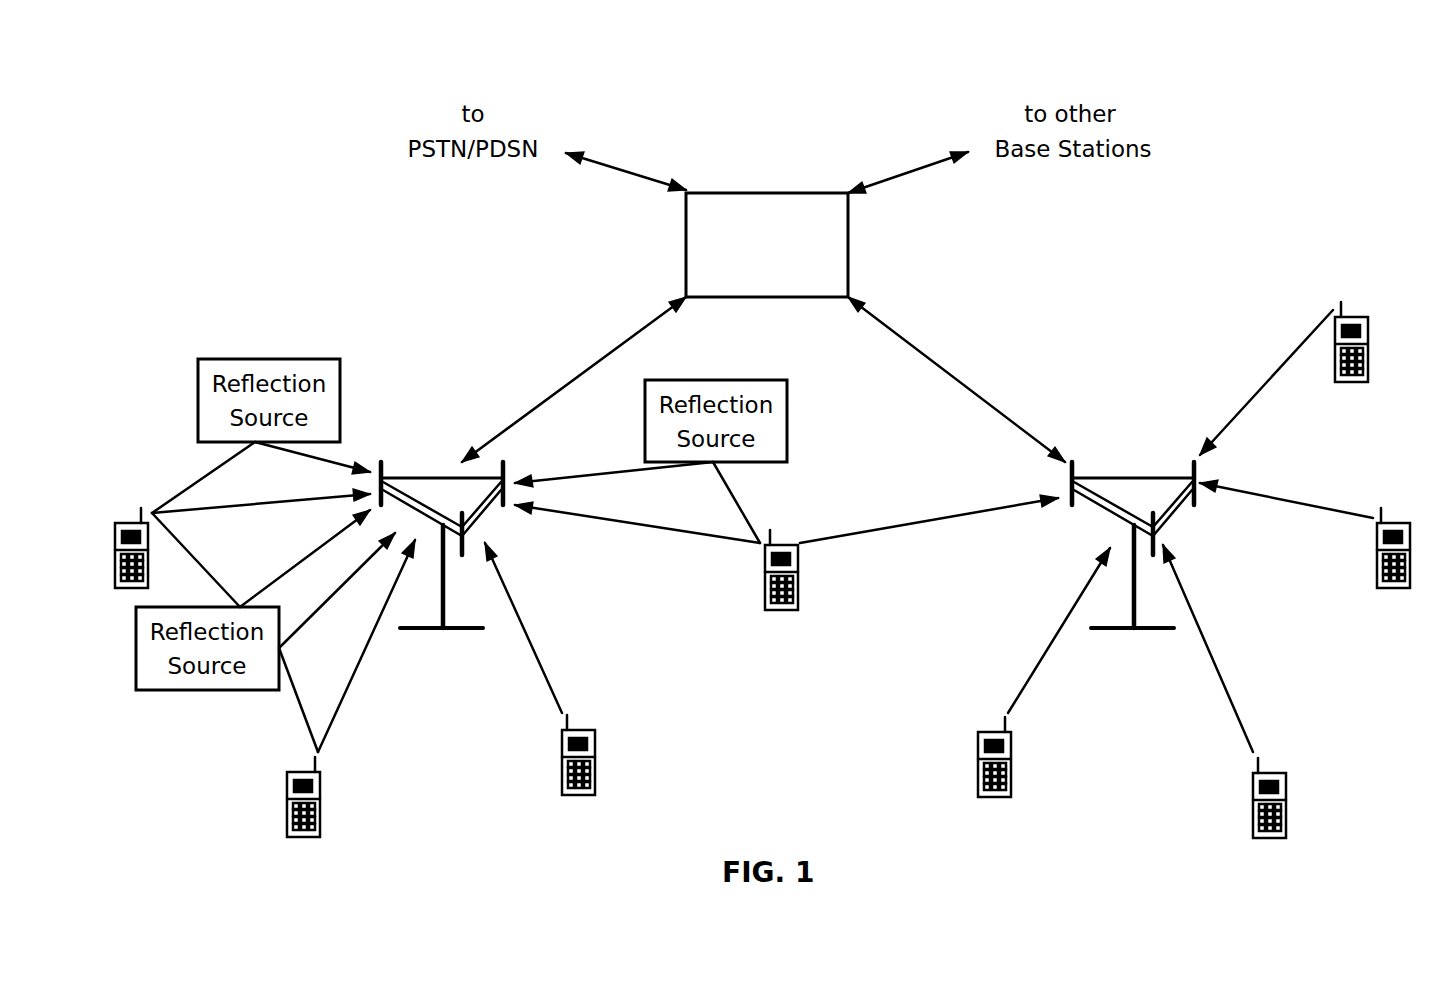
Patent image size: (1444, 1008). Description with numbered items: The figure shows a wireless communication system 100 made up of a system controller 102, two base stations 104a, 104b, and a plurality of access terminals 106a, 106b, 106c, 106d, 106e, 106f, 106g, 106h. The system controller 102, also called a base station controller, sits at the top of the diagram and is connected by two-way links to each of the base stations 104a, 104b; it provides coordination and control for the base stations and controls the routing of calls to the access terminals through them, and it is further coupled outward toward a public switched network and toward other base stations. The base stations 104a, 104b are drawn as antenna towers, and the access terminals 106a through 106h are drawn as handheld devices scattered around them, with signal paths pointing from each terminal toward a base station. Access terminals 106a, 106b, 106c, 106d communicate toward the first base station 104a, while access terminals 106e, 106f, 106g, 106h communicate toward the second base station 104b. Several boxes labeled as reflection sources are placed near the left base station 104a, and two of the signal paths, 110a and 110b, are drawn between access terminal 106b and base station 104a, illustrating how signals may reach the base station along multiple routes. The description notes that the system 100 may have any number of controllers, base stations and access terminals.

The wireless communication system 100 is at (1312, 80).
The system controller 102 is at (760, 193).
The base station 104a is at (428, 477).
The base station 104b is at (1148, 477).
The access terminal 106a is at (130, 523).
The access terminal 106b is at (300, 772).
The access terminal 106c is at (598, 714).
The access terminal 106d is at (787, 545).
The access terminal 106e is at (991, 732).
The access terminal 106f is at (1290, 758).
The access terminal 106g is at (1412, 508).
The access terminal 106h is at (1357, 317).
The signal path 110a is at (352, 690).
The reflected signal path 110b is at (314, 623).